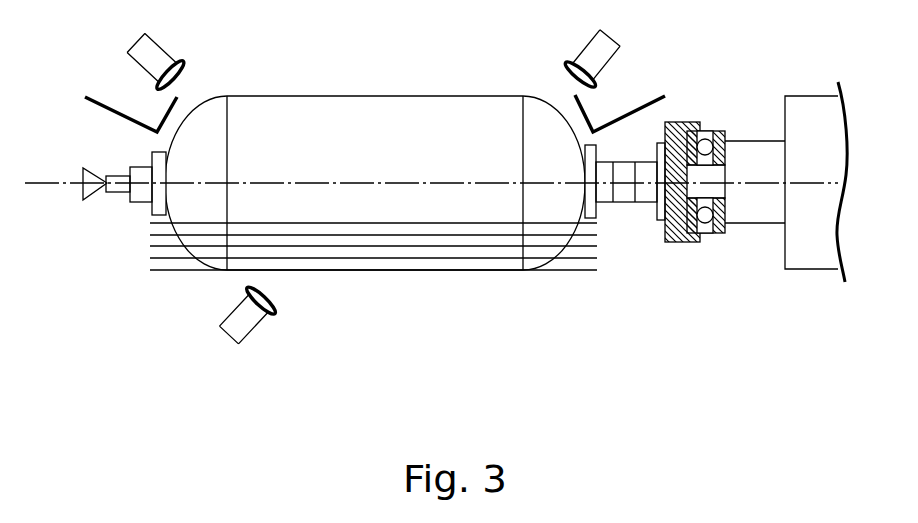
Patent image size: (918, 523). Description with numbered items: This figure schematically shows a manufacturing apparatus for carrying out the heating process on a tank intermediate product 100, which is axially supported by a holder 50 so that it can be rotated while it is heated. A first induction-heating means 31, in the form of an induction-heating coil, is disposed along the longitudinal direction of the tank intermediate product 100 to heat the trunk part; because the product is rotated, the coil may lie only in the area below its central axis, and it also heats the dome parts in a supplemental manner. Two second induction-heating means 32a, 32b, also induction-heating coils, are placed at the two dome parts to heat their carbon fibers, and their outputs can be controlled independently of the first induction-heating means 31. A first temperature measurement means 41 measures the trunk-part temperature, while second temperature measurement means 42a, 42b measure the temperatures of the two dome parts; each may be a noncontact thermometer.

The tank intermediate product 100 is at (330, 102).
The first induction-heating means 31 is at (598, 245).
The second induction-heating means 32a is at (108, 114).
The second induction-heating means 32b is at (665, 97).
The first temperature measurement means 41 is at (257, 322).
The second temperature measurement means 42a is at (162, 44).
The second temperature measurement means 42b is at (612, 47).
The holder 50 is at (802, 110).